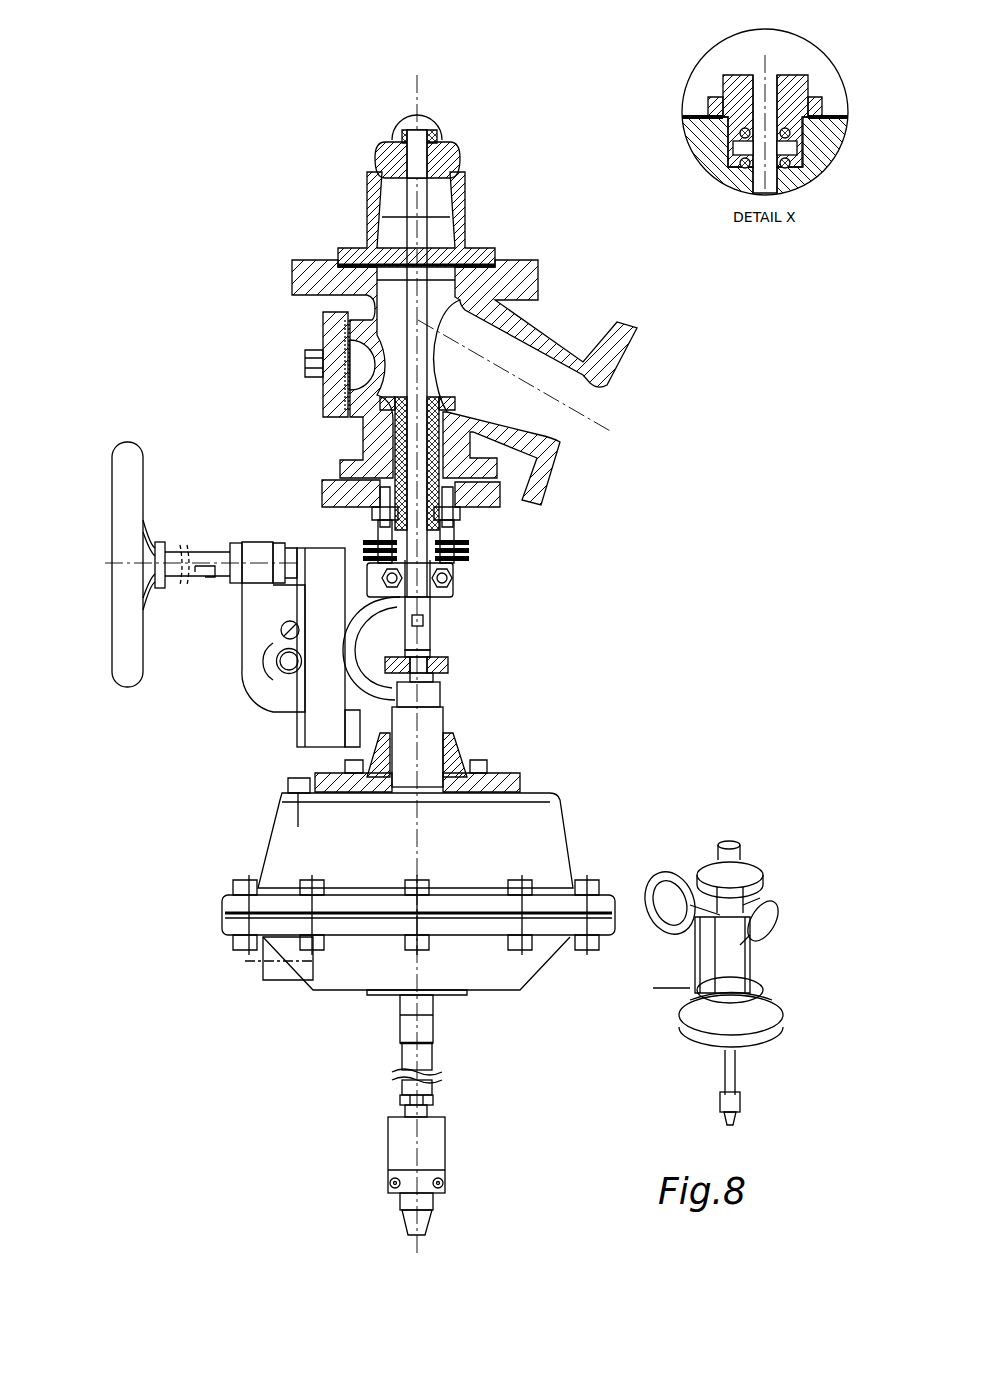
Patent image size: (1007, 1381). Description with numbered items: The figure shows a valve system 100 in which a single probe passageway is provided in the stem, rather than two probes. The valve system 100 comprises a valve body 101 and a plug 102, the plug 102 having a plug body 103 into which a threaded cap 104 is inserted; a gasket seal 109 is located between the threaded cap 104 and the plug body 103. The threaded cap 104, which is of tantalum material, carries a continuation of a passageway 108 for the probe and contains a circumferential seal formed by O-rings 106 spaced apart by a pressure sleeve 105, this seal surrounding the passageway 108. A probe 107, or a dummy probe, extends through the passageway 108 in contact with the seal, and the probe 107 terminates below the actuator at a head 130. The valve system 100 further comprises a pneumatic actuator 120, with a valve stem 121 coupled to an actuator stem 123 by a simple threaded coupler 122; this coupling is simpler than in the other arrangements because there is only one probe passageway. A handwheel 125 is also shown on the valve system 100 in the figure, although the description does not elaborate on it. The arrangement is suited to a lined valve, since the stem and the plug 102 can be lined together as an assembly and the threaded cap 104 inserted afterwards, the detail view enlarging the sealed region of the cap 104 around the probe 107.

The valve system 100 is at (190, 183).
The valve body 101 is at (546, 331).
The plug 102 is at (473, 152).
The plug body 103 is at (823, 170).
The threaded cap 104 is at (722, 80).
The pressure sleeve 105 is at (740, 148).
The O-rings 106 is at (745, 135).
The probe 107 is at (753, 192).
The passageway 108 is at (388, 175).
The gasket seal 109 is at (710, 97).
The pneumatic actuator 120 is at (240, 845).
The valve stem 121 is at (430, 610).
The threaded coupler 122 is at (450, 665).
The actuator stem 123 is at (436, 693).
The handwheel 125 is at (152, 445).
The head 130 is at (363, 1121).